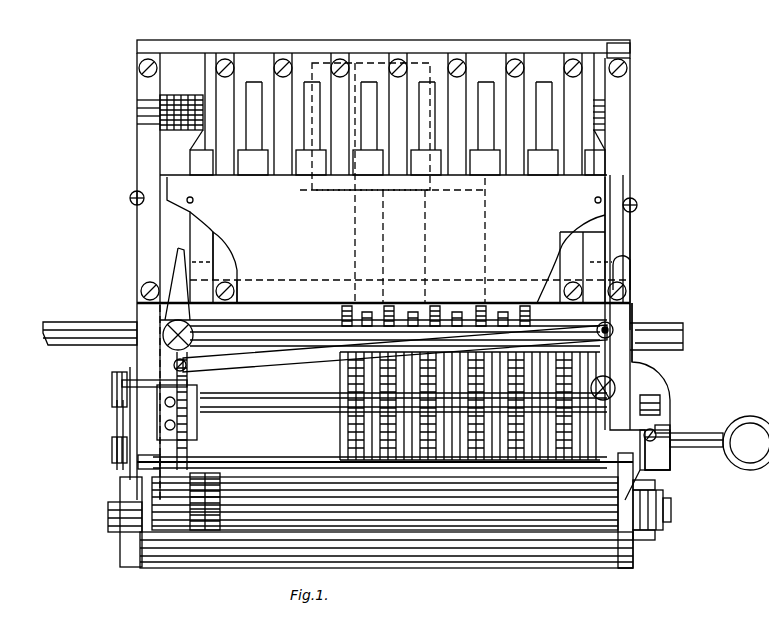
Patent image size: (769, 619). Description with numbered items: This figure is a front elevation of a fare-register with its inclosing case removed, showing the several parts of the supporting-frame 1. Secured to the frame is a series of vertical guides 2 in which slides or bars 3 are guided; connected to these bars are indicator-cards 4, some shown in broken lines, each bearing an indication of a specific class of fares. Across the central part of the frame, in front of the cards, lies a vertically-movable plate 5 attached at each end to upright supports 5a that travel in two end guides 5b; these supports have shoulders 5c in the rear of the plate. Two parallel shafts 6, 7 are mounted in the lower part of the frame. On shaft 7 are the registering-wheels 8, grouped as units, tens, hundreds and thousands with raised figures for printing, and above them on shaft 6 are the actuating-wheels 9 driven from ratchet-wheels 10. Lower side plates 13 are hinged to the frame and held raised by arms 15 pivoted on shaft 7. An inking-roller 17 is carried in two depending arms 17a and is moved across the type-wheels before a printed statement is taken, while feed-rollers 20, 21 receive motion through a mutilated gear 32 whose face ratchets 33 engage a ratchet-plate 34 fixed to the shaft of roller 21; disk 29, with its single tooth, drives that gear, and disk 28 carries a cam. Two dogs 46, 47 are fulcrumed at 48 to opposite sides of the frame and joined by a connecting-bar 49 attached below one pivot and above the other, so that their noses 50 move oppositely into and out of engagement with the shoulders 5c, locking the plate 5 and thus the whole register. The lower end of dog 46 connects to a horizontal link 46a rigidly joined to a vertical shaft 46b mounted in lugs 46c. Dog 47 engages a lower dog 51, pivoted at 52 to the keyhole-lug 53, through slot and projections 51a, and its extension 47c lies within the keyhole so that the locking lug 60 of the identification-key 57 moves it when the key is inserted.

The supporting-frame 1 is at (368, 48).
The vertical guides 2 is at (290, 118).
The slides or bars 3 is at (397, 162).
The indicator-cards 4 is at (312, 62).
The vertically-movable plate 5 is at (326, 231).
The upright supports 5a is at (204, 226).
The end guides 5b is at (200, 138).
The shoulders 5c is at (206, 262).
The shaft 6 is at (298, 326).
The shaft 7 is at (297, 408).
The registering-wheels 8 is at (338, 444).
The actuating-wheels 9 is at (344, 306).
The ratchet-wheels 10 is at (399, 312).
The lower side plates 13 is at (128, 490).
The arms 15 is at (123, 420).
The inking-roller 17 is at (262, 464).
The depending arms 17a is at (137, 352).
The feed-roller 20 is at (385, 503).
The feed-roller 21 is at (386, 541).
The disk 28 is at (135, 540).
The disk 29 is at (630, 548).
The mutilated gear 32 is at (656, 540).
The ratchets 33 is at (660, 500).
The ratchet-plate 34 is at (671, 522).
The dog 46 is at (203, 325).
The horizontal link 46a is at (155, 380).
The vertical shaft 46b is at (112, 440).
The lugs 46c is at (112, 388).
The dog 47 is at (625, 312).
The extension 47c is at (668, 428).
The fulcrums or pivots 48 is at (163, 328).
The connecting-bar 49 is at (313, 362).
The noses 50 is at (205, 262).
The lower dog 51 is at (655, 462).
The slot and projections 51a is at (646, 397).
The pivot 52 is at (658, 425).
The keyhole-lug 53 is at (670, 452).
The identification-key 57 is at (742, 416).
The locking lug 60 is at (697, 434).